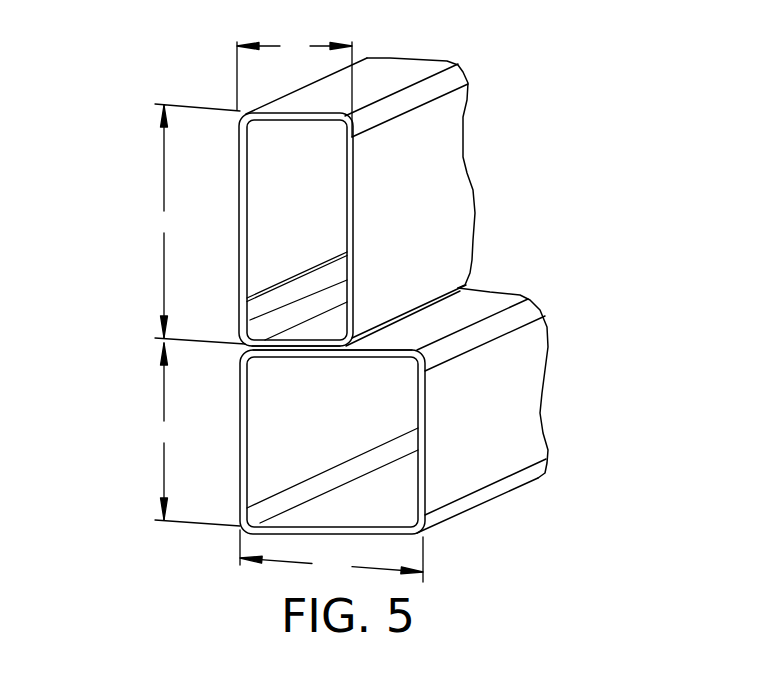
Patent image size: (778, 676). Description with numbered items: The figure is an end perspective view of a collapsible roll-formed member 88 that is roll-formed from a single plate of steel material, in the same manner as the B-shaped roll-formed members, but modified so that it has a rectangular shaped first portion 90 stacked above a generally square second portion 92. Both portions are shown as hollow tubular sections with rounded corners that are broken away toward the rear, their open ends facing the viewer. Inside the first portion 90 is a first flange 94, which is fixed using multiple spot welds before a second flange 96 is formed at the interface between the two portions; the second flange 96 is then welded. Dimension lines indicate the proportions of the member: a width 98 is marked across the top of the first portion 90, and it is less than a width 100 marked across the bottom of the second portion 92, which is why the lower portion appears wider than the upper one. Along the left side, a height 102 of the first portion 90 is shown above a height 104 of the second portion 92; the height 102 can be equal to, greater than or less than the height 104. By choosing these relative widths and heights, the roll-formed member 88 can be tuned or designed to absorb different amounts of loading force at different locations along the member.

The collapsible roll-formed member 88 is at (108, 113).
The first portion 90 is at (240, 150).
The second portion 92 is at (240, 435).
The first flange 94 is at (247, 310).
The second flange 96 is at (320, 340).
The width of the first portion 98 is at (294, 86).
The width of the second portion 100 is at (331, 556).
The height of the first portion 102 is at (195, 224).
The height of the second portion 104 is at (193, 434).